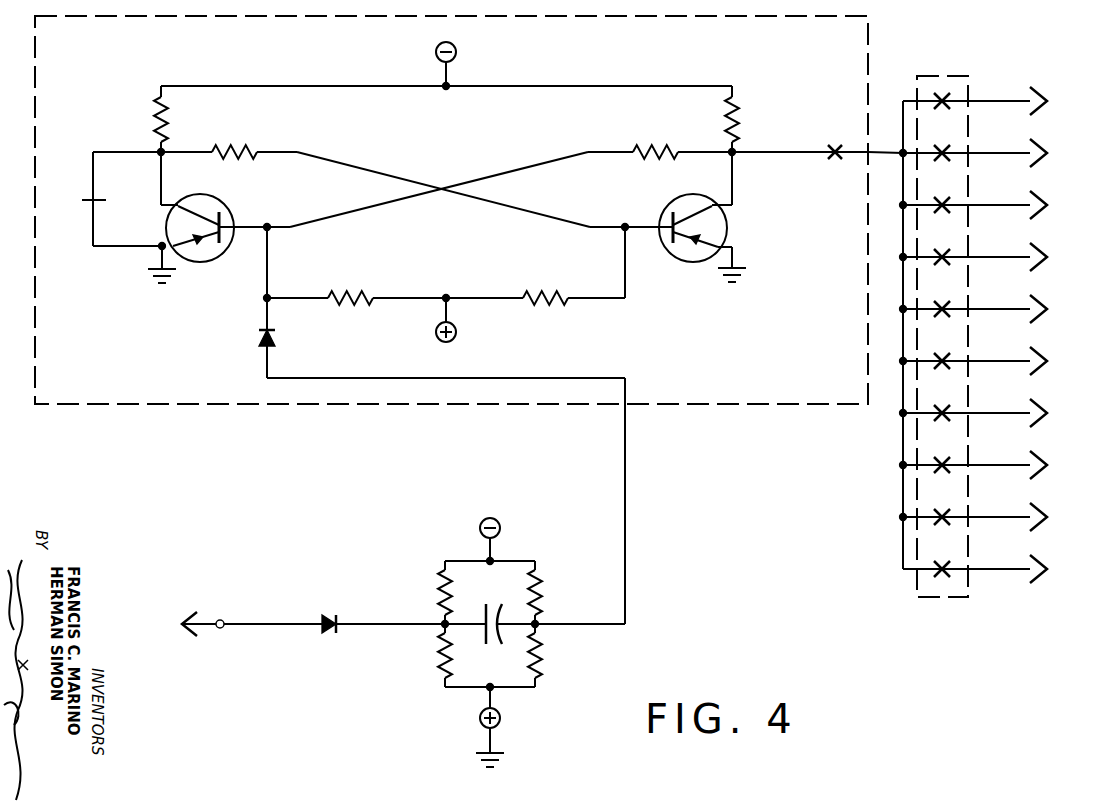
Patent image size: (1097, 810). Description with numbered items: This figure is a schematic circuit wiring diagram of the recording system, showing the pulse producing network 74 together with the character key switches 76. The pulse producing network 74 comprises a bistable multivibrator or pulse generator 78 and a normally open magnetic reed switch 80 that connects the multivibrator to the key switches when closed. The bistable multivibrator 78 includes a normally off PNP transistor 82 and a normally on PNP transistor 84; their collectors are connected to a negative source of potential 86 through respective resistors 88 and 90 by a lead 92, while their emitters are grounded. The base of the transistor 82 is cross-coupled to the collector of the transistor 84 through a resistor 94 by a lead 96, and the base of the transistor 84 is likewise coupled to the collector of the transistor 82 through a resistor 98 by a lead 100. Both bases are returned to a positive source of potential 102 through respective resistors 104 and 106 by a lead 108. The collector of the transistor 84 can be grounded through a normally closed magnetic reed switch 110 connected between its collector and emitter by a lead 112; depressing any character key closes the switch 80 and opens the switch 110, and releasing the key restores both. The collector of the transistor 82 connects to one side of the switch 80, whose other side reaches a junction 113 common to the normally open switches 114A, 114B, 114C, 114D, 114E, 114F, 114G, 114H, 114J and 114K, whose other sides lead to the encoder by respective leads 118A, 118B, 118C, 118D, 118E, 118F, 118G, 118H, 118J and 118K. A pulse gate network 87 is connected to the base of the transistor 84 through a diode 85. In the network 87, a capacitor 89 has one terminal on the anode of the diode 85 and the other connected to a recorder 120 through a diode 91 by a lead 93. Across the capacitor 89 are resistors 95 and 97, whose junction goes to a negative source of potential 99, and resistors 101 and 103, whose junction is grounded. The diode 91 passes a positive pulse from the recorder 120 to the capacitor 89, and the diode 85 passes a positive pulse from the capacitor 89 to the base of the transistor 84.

The pulse producing network 74 is at (77, 48).
The character key switches 76 is at (962, 604).
The bistable multivibrator 78 is at (583, 85).
The normally open magnetic reed switch 80 is at (834, 147).
The normally off PNP transistor 82 is at (662, 204).
The normally on PNP transistor 84 is at (228, 212).
The diode 85 is at (274, 340).
The negative source of potential 86 is at (456, 54).
The pulse gate network 87 is at (545, 570).
The resistor 88 is at (738, 118).
The capacitor 89 is at (484, 602).
The resistor 90 is at (169, 120).
The diode 91 is at (329, 616).
The lead 92 is at (478, 86).
The lead 93 is at (231, 621).
The resistor 94 is at (222, 148).
The resistor 95 is at (434, 601).
The lead 96 is at (400, 172).
The resistor 97 is at (546, 602).
The resistor 98 is at (654, 148).
The negative source of potential 99 is at (502, 514).
The lead 100 is at (468, 176).
The resistor 101 is at (436, 664).
The positive source of potential 102 is at (458, 338).
The resistor 103 is at (540, 658).
The resistor 104 is at (540, 288).
The resistor 106 is at (340, 288).
The lead 108 is at (492, 282).
The normally closed magnetic reed switch 110 is at (94, 200).
The lead 112 is at (121, 150).
The junction 113 is at (878, 151).
The normally open switch 114K is at (958, 98).
The normally open switch 114A is at (958, 150).
The normally open switch 114B is at (958, 202).
The normally open switch 114C is at (958, 254).
The normally open switch 114D is at (958, 306).
The normally open switch 114E is at (958, 358).
The normally open switch 114F is at (958, 410).
The normally open switch 114G is at (958, 462).
The normally open switch 114H is at (958, 514).
The normally open switch 114J is at (958, 566).
The lead 118K is at (1034, 105).
The lead 118A is at (1034, 157).
The lead 118B is at (1034, 209).
The lead 118C is at (1034, 261).
The lead 118D is at (1034, 313).
The lead 118E is at (1034, 365).
The lead 118F is at (1034, 417).
The lead 118G is at (1034, 469).
The lead 118H is at (1034, 521).
The lead 118J is at (1034, 573).
The recorder 120 is at (151, 625).